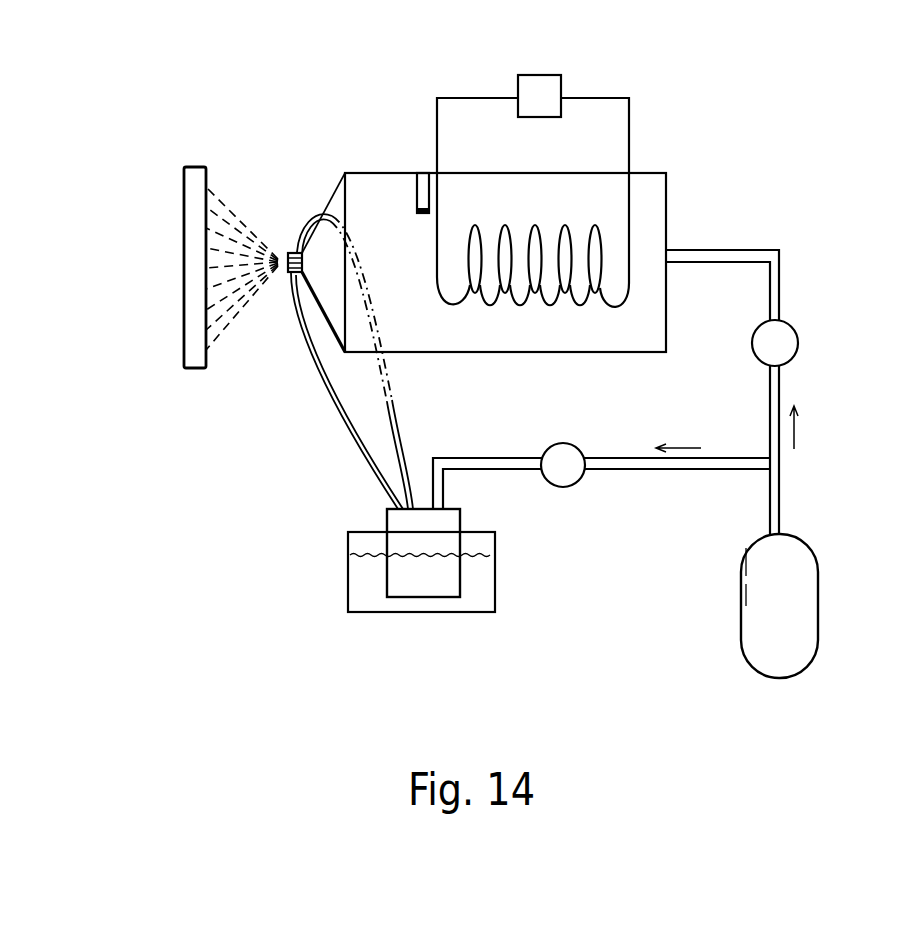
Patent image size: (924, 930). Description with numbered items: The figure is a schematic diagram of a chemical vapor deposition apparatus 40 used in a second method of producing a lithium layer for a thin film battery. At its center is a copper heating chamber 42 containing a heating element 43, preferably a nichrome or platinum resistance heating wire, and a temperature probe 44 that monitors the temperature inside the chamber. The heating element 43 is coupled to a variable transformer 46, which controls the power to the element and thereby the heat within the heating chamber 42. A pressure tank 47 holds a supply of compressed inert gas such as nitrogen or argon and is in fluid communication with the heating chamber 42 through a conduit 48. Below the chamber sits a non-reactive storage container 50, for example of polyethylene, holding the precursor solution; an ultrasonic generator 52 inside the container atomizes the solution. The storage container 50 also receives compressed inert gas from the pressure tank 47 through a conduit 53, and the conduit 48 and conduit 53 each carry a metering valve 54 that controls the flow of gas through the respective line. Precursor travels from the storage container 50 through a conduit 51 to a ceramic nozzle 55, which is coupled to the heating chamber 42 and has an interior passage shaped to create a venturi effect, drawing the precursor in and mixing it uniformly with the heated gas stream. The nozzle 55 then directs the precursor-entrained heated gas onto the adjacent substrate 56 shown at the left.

The chemical vapor deposition apparatus 40 is at (780, 136).
The copper heating chamber 42 is at (380, 178).
The heating element 43 is at (496, 230).
The temperature probe 44 is at (417, 195).
The variable transformer 46 is at (551, 75).
The pressure tank 47 is at (820, 583).
The conduit 48 is at (781, 494).
The non-reactive storage container 50 is at (485, 612).
The conduit 51 is at (358, 425).
The ultrasonic generator 52 is at (387, 525).
The conduit 53 is at (511, 460).
The metering valves 54 is at (798, 341).
The nozzle 55 is at (292, 252).
The substrate 56 is at (193, 167).